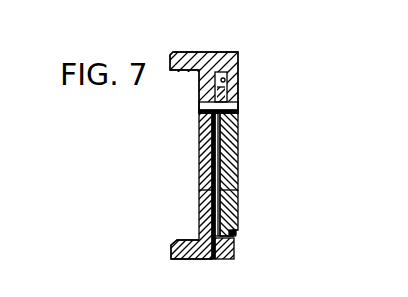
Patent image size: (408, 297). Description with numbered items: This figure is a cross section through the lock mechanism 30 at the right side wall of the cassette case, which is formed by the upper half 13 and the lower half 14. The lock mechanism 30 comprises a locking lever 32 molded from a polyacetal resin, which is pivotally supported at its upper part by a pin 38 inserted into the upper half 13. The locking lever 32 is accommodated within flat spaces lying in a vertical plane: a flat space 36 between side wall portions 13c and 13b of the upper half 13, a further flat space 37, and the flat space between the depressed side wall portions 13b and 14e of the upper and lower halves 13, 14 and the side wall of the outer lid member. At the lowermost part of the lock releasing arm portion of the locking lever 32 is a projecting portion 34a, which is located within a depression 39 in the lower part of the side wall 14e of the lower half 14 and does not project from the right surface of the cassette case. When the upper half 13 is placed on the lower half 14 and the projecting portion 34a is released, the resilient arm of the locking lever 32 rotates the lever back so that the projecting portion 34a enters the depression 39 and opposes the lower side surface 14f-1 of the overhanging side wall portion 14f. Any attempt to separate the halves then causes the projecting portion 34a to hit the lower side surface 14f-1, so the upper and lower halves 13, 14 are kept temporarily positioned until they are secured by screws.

The upper half 13 is at (198, 50).
The lock mechanism 30 is at (258, 45).
The flat space 36 is at (226, 81).
The pin 38 is at (199, 107).
The depressed side wall portion 13b is at (203, 132).
The side wall portion 13c is at (238, 128).
The locking lever 32 is at (221, 172).
The flat space 37 is at (212, 188).
The depressed side wall portion 14e is at (203, 210).
The overhanging side wall portion 14f is at (238, 191).
The lower side surface 14f-1 is at (237, 231).
The depression 39 is at (236, 237).
The projecting portion 34a is at (234, 256).
The lower half 14 is at (173, 252).